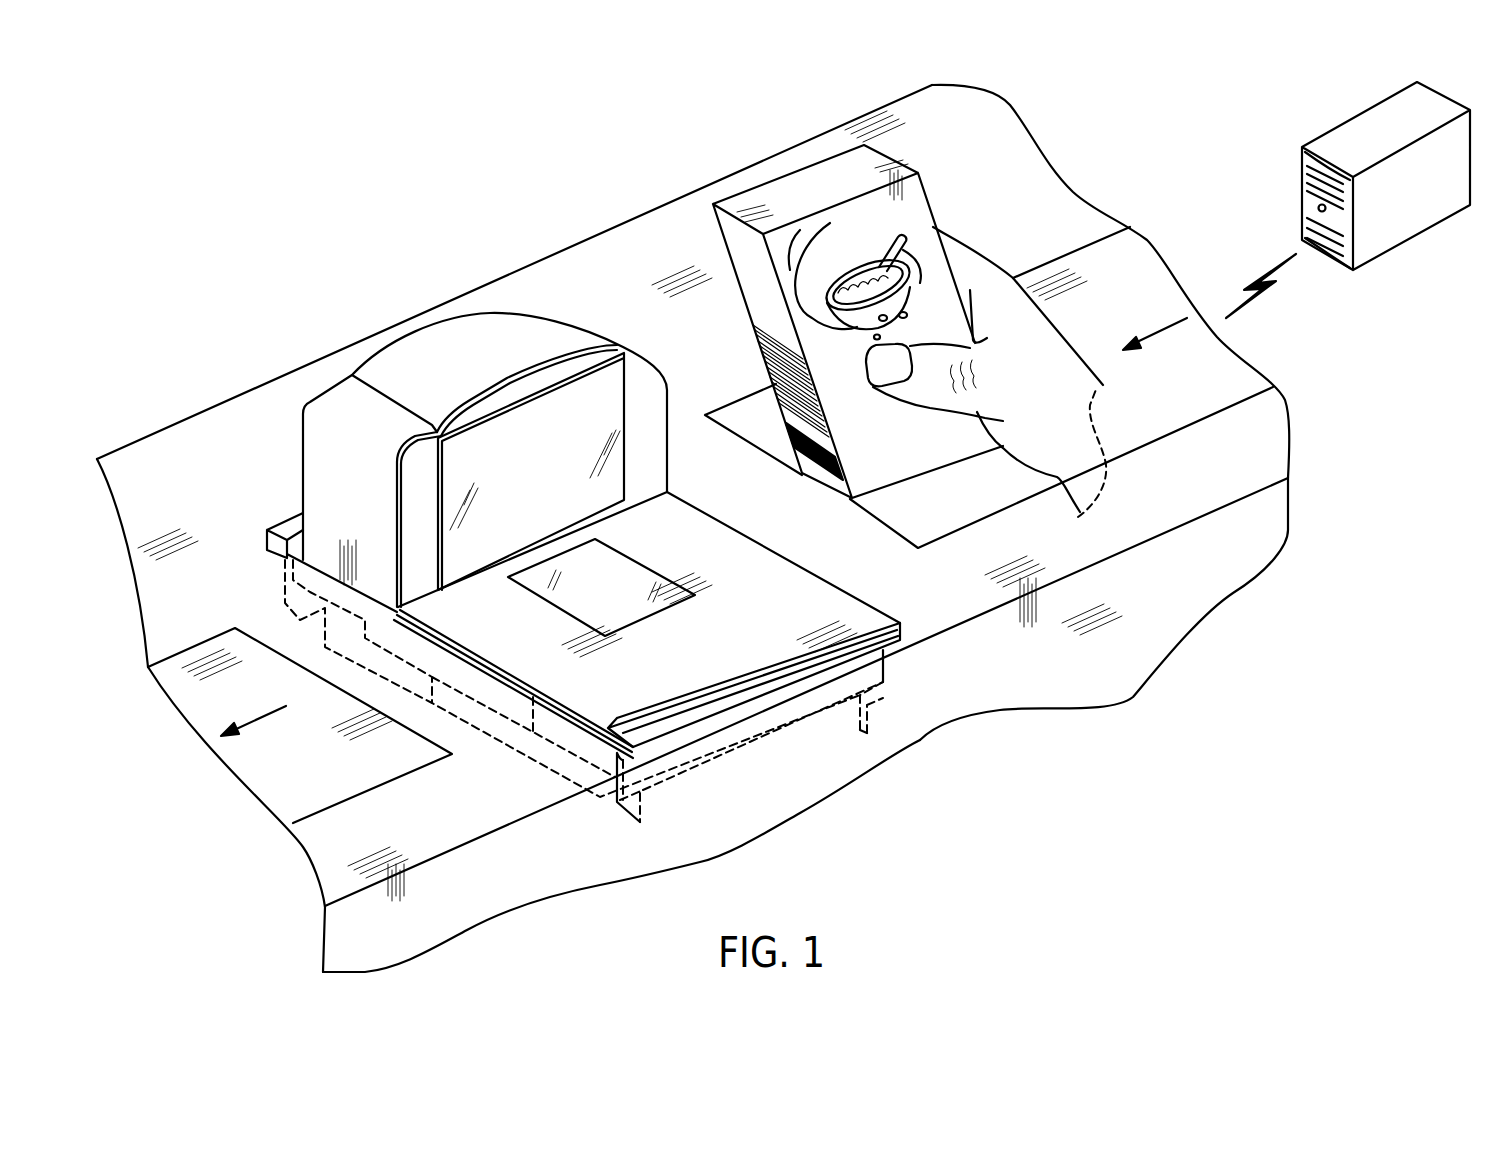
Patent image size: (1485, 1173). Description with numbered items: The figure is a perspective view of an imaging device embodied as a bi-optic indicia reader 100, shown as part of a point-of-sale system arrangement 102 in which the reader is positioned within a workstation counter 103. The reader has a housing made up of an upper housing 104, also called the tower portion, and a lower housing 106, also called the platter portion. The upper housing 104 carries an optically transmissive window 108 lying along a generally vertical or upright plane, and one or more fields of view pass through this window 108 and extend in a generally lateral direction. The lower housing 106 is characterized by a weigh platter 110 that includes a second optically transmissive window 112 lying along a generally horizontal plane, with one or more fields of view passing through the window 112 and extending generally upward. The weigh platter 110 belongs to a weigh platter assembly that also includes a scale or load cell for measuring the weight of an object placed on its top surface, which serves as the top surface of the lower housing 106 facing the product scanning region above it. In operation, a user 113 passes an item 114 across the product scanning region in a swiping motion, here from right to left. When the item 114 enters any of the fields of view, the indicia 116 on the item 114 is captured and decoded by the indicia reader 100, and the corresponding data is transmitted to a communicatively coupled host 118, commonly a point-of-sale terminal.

The bi-optic indicia reader 100 is at (196, 350).
The point-of-sale (POS) system arrangement 102 is at (582, 221).
The workstation counter 103 is at (198, 504).
The upper housing 104 is at (408, 358).
The lower housing 106 is at (553, 737).
The optically transmissive window 108 is at (494, 457).
The weigh platter 110 is at (765, 638).
The optically transmissive window 112 is at (557, 608).
The user 113 is at (1070, 370).
The item 114 is at (782, 190).
The indicia 116 is at (840, 453).
The host 118 is at (1300, 192).